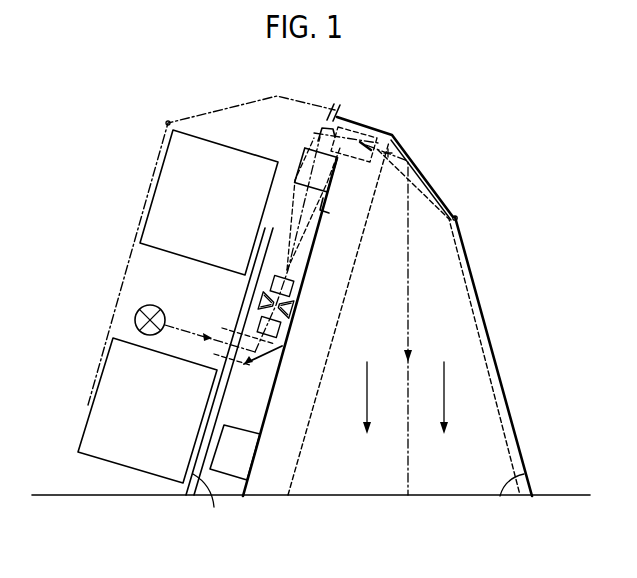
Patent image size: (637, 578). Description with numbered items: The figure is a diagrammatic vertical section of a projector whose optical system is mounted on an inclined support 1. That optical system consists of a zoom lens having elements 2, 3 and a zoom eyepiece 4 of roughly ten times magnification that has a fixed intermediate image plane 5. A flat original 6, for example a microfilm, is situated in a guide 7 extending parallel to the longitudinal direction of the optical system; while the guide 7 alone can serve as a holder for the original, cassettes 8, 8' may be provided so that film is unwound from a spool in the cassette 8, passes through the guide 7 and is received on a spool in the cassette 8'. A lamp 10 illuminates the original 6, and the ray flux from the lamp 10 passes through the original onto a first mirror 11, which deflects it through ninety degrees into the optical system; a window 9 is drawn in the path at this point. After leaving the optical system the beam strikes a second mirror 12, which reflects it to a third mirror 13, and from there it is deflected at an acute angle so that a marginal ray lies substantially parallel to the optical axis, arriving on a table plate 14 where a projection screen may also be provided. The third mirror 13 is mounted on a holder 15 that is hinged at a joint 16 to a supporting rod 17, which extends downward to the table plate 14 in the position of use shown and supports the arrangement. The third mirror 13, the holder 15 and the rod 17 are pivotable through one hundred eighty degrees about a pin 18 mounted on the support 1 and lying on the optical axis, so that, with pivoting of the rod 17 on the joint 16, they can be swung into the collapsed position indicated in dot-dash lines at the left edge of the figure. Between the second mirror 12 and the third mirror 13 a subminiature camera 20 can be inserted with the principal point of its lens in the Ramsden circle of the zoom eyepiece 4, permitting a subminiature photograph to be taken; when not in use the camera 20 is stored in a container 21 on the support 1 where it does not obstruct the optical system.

The support 1 is at (273, 398).
The zoom lens element 2 is at (292, 305).
The zoom lens element 3 is at (292, 285).
The zoom eyepiece 4 is at (320, 172).
The fixed intermediate image plane 5 is at (326, 208).
The flat original 6 is at (223, 398).
The guide 7 is at (204, 504).
The cassette 8 is at (209, 202).
The cassette 8' is at (147, 410).
The window 9 is at (230, 338).
The lamp 10 is at (150, 305).
The first mirror 11 is at (283, 348).
The second mirror 12 is at (333, 137).
The third mirror 13 is at (422, 187).
The table plate 14 is at (524, 474).
The holder 15 is at (405, 147).
The joint 16 is at (458, 217).
The supporting rod 17 is at (497, 373).
The pin 18 is at (338, 107).
The subminiature camera 20 is at (368, 141).
The container 21 is at (242, 450).